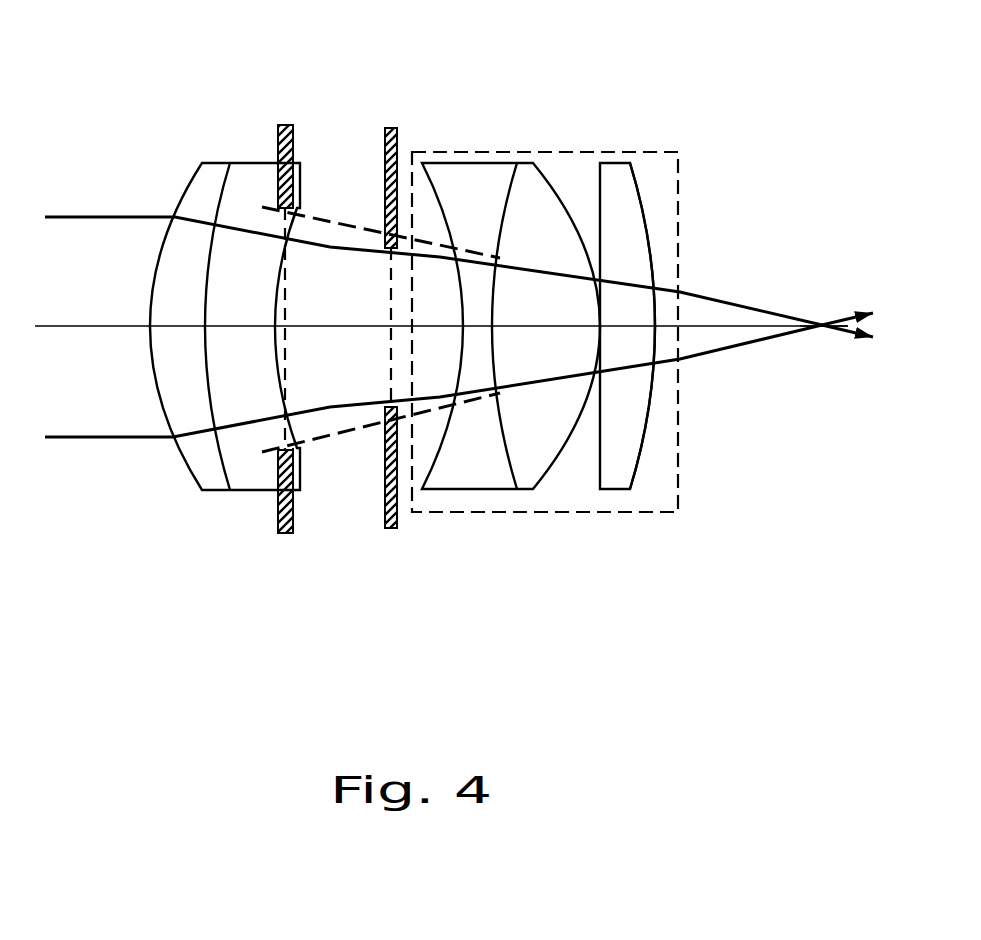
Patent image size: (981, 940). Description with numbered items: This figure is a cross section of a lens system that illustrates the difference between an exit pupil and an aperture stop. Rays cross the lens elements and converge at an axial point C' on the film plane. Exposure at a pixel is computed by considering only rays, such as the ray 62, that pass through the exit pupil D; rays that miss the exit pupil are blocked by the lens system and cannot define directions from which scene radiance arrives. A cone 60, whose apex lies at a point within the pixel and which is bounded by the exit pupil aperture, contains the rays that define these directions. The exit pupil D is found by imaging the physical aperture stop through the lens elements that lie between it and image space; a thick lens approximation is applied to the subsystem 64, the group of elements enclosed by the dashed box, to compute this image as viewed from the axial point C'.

The cone 60 is at (332, 207).
The subsystem 64 is at (548, 512).
The ray 62 is at (137, 437).
The exit pupil D is at (291, 535).
The axial point on the film plane C' is at (831, 362).